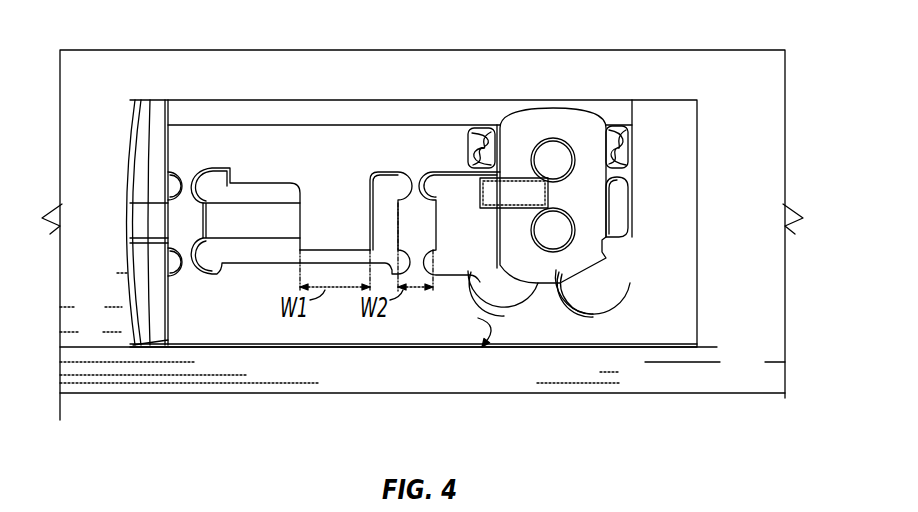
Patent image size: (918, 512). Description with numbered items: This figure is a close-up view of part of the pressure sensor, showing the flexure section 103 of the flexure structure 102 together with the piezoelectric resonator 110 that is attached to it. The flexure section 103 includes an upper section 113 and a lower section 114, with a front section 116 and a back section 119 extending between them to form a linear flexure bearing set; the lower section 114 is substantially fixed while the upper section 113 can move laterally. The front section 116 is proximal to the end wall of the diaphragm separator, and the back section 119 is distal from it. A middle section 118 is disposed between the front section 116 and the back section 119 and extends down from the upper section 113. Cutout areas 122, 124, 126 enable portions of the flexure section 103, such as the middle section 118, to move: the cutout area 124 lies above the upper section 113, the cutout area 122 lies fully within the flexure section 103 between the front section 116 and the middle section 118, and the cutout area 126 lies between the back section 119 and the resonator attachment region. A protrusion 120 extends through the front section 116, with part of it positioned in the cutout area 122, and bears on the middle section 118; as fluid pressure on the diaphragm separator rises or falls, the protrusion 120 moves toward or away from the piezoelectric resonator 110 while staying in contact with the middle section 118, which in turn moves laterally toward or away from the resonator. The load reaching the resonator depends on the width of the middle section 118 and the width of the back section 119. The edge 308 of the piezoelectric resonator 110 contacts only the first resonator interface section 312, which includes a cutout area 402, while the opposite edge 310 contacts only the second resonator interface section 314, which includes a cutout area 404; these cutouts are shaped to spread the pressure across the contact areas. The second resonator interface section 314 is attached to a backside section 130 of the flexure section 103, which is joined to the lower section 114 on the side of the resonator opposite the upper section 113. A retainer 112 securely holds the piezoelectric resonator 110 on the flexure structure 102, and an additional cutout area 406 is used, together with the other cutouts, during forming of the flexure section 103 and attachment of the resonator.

The flexure structure 102 is at (107, 62).
The flexure section 103 is at (263, 322).
The piezoelectric resonator 110 is at (550, 130).
The retainer 112 is at (497, 202).
The upper section 113 is at (290, 143).
The lower section 114 is at (198, 318).
The front section 116 is at (183, 227).
The middle section 118 is at (333, 232).
The back section 119 is at (403, 216).
The protrusion 120 is at (255, 217).
The cutout area 122 is at (283, 257).
The cutout area 124 is at (195, 117).
The cutout area 126 is at (488, 253).
The backside section 130 is at (629, 247).
The edge of the piezoelectric resonator 308 is at (462, 250).
The edge of the piezoelectric resonator 310 is at (615, 207).
The first resonator interface section 312 is at (478, 128).
The second resonator interface section 314 is at (608, 152).
The cutout area 402 is at (470, 160).
The cutout area 404 is at (630, 158).
The cutout area 406 is at (606, 297).